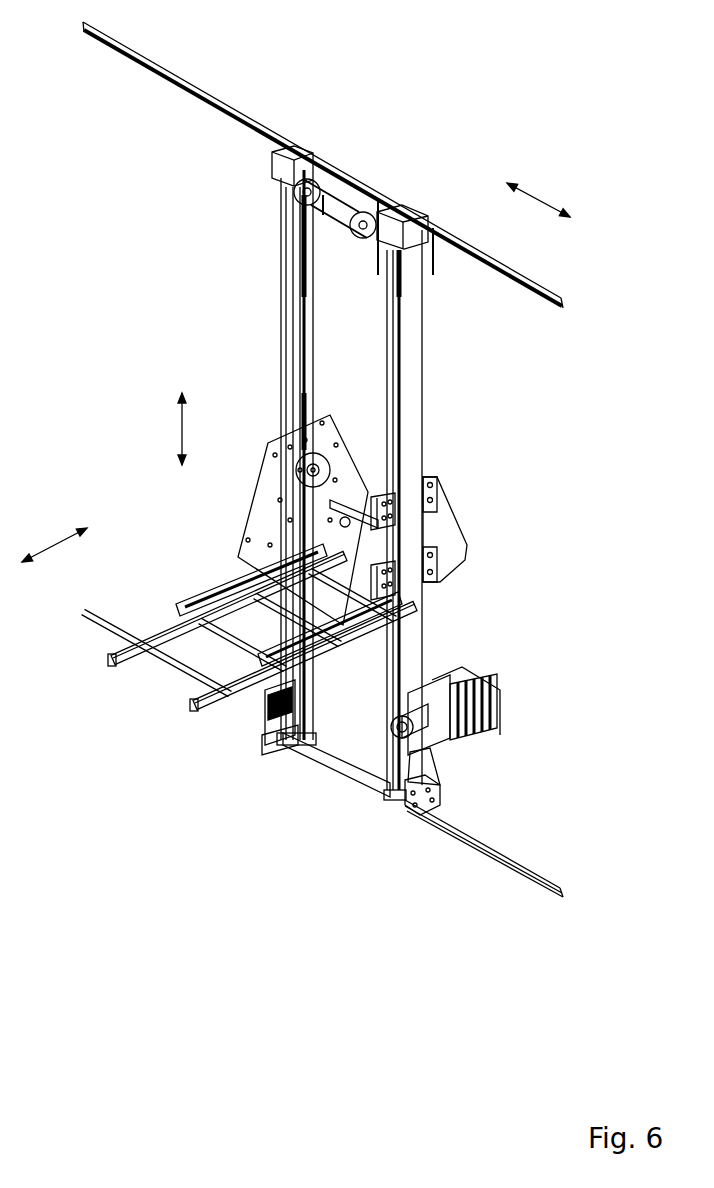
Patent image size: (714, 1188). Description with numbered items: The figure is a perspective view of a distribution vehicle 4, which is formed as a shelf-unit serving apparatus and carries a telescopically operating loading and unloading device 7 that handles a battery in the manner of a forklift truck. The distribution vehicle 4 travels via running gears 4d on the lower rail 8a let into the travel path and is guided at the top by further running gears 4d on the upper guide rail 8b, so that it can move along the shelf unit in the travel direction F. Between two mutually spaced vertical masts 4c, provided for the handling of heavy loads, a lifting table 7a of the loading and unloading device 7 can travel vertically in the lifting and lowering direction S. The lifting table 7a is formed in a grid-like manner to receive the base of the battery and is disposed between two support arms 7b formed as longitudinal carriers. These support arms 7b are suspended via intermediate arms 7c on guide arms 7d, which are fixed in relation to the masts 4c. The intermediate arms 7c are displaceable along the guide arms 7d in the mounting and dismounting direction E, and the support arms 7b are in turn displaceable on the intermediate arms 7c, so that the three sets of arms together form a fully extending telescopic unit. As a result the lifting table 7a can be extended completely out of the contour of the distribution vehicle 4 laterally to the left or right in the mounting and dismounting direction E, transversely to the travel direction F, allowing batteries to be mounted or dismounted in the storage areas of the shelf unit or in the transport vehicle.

The distribution vehicle 4 is at (203, 335).
The vertical mast 4c is at (295, 272).
The running gear 4d is at (395, 227).
The loading and unloading device 7 is at (468, 512).
The lifting table 7a is at (200, 655).
The support arm 7b is at (220, 703).
The intermediate arm 7c is at (275, 745).
The guide arm 7d is at (372, 590).
The rail 8a is at (487, 840).
The upper guide rail 8b is at (442, 223).
The travel direction F is at (538, 192).
The lifting and lowering direction S is at (173, 429).
The mounting and dismounting direction E is at (54, 539).